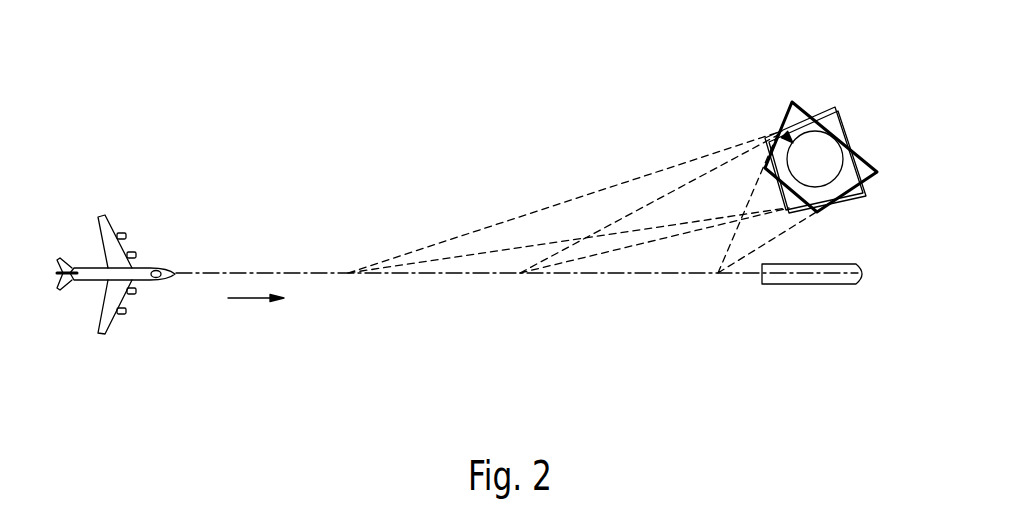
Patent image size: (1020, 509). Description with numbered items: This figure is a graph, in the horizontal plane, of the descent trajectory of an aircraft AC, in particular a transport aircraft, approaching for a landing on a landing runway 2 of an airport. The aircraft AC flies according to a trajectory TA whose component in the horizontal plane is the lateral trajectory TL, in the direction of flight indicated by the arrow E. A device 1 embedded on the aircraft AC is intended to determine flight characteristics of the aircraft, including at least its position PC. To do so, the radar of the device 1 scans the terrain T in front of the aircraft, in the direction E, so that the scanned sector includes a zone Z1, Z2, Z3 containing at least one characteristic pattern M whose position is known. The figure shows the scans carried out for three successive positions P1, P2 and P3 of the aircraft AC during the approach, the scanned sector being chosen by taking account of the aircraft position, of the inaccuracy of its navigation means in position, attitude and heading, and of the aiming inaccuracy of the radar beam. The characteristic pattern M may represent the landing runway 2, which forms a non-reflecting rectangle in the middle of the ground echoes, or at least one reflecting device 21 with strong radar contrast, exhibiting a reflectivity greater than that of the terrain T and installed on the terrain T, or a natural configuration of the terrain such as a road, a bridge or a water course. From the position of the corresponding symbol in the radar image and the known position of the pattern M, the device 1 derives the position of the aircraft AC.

The aircraft AC is at (118, 258).
The device 1 is at (162, 281).
The position PC is at (86, 219).
The arrow indicating direction of flight E is at (251, 299).
The lateral trajectory TL is at (300, 276).
The trajectory TA is at (330, 258).
The first successive position P1 is at (348, 275).
The second successive position P2 is at (520, 275).
The third successive position P3 is at (719, 275).
The landing runway 2 is at (813, 286).
The terrain T is at (836, 145).
The zone Z1 is at (800, 102).
The zone Z2 is at (828, 104).
The zone Z3 is at (847, 207).
The characteristic pattern M is at (856, 137).
The reflecting device 21 is at (783, 133).